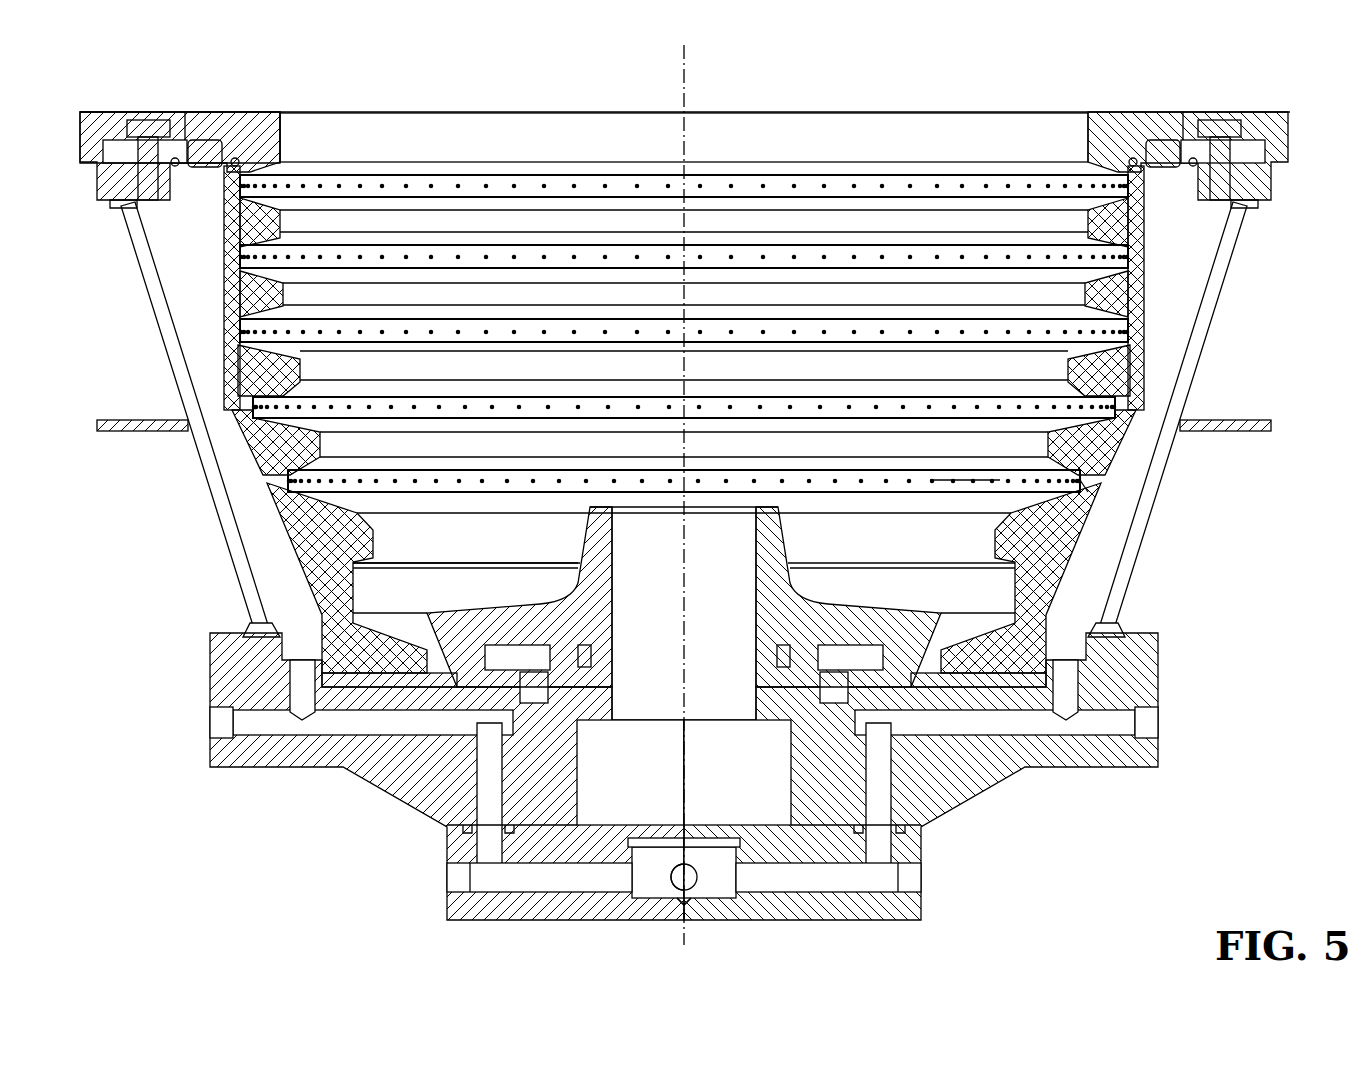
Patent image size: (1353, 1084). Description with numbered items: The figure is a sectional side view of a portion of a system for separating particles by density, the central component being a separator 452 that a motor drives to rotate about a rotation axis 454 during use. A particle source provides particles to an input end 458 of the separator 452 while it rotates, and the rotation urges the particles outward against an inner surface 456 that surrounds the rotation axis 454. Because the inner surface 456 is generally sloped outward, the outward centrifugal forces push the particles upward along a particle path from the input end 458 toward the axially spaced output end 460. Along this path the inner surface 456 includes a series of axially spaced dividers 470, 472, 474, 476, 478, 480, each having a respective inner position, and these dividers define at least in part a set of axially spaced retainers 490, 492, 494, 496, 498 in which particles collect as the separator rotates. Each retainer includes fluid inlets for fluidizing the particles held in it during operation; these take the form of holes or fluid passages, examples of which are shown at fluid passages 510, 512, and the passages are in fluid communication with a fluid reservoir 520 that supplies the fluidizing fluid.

The separator 452 is at (230, 90).
The rotation axis 454 is at (688, 72).
The inner surface 456 is at (925, 225).
The input end 458 is at (392, 590).
The output end 460 is at (455, 122).
The divider 470 is at (384, 520).
The divider 472 is at (332, 425).
The divider 474 is at (326, 340).
The divider 476 is at (308, 273).
The divider 478 is at (300, 226).
The divider 480 is at (283, 133).
The retainer 490 is at (1062, 478).
The retainer 492 is at (1110, 404).
The retainer 494 is at (1106, 332).
The retainer 496 is at (1114, 262).
The retainer 498 is at (1112, 192).
The fluid passage 510 is at (1088, 482).
The fluid passage 512 is at (939, 484).
The fluid reservoir 520 is at (1094, 561).